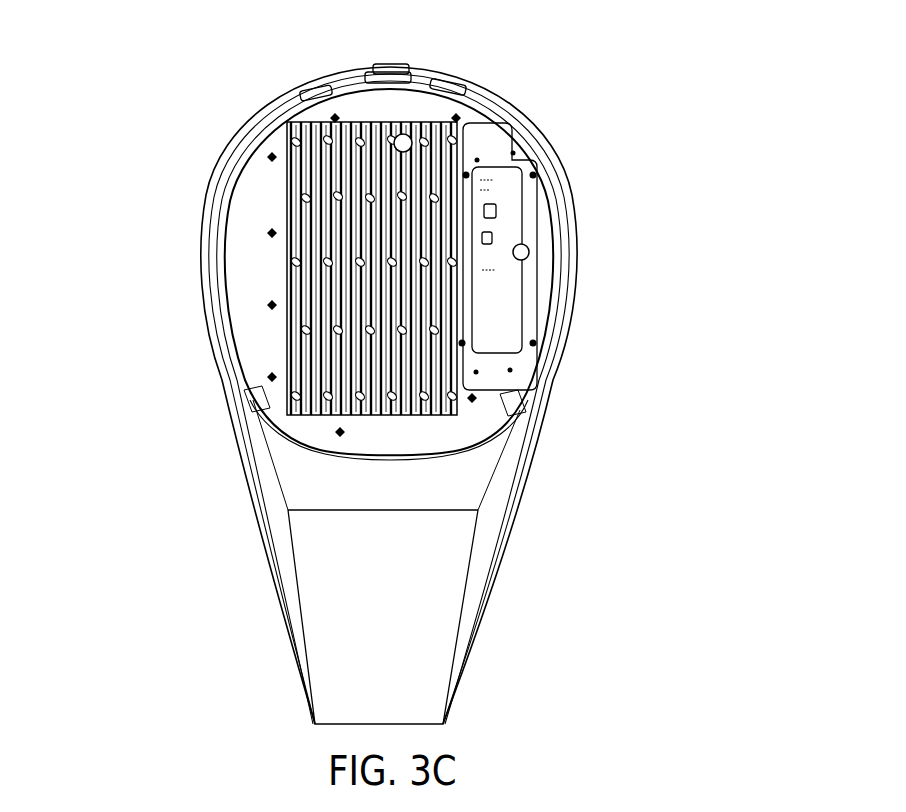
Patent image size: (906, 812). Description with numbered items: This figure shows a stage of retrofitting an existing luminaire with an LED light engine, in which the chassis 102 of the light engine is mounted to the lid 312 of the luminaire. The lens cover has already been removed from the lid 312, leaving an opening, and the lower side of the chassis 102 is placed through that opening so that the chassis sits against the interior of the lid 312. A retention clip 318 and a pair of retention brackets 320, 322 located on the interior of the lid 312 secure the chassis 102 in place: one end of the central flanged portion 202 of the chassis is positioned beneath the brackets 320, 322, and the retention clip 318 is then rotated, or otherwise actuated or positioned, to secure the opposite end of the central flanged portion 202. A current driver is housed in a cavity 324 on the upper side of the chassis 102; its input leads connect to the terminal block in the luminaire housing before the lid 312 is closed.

The chassis 102 is at (250, 213).
The central flanged portion 202 is at (222, 333).
The lid 312 is at (213, 145).
The retention clip 318 is at (395, 72).
The retention bracket 320 is at (510, 408).
The retention bracket 322 is at (253, 398).
The cavity 324 is at (495, 148).